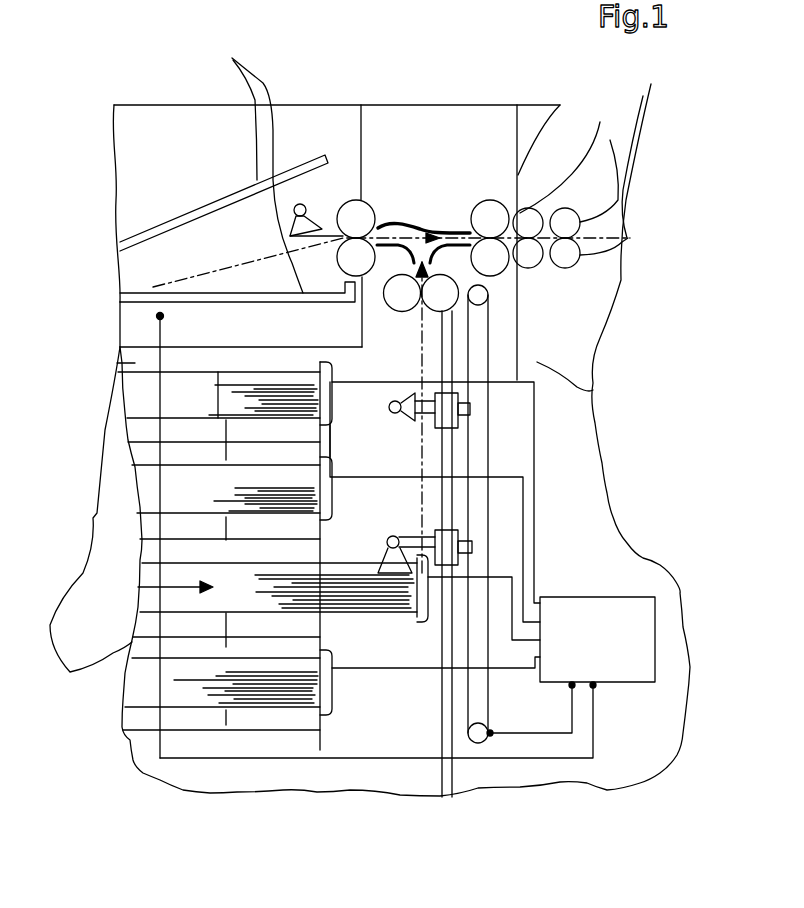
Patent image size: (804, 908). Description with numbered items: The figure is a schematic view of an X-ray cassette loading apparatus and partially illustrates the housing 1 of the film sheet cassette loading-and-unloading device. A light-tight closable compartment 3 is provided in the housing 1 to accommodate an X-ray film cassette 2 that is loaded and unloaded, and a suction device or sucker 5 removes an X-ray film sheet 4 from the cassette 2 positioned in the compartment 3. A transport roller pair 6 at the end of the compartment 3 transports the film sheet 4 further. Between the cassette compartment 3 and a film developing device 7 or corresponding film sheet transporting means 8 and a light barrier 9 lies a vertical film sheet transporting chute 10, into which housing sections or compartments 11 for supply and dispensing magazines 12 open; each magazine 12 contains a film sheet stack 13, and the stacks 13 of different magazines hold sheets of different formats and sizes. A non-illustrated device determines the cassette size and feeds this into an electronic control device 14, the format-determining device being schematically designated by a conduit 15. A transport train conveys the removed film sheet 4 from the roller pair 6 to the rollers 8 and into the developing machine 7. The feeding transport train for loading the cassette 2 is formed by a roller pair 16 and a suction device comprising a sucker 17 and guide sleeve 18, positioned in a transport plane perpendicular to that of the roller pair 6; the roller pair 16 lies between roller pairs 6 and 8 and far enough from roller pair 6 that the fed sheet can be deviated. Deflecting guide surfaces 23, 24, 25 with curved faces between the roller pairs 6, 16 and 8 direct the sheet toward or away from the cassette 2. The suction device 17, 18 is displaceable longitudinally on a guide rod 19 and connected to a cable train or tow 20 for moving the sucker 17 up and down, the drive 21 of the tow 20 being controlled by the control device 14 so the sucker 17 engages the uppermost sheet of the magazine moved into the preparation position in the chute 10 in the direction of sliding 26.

The housing 1 is at (625, 290).
The X-ray film cassette 2 is at (284, 163).
The light-tight closable compartment 3 is at (203, 135).
The X-ray film sheet 4 is at (197, 270).
The suction device or sucker 5 is at (373, 200).
The transport roller pair 6 is at (400, 244).
The film developing device 7 is at (560, 105).
The film sheet transporting means 8 is at (528, 208).
The light barrier 9 is at (651, 71).
The vertical film sheet transporting chute 10 is at (502, 333).
The housing sections or compartments 11 is at (143, 455).
The dispensing magazines 12 is at (202, 657).
The film sheet stack 13 is at (280, 500).
The electronic control device 14 is at (620, 597).
The conduit 15 is at (157, 333).
The roller pair 16 is at (435, 315).
The sucker 17 is at (378, 557).
The guide sleeve 18 is at (445, 538).
The guide rod 19 is at (448, 457).
The cable train or tow 20 is at (488, 435).
The drive 21 is at (478, 743).
The deflecting guide surface 23 is at (408, 218).
The deflecting guide surface 24 is at (432, 228).
The deflecting guide surface 25 is at (460, 231).
The direction of sliding 26 is at (170, 592).